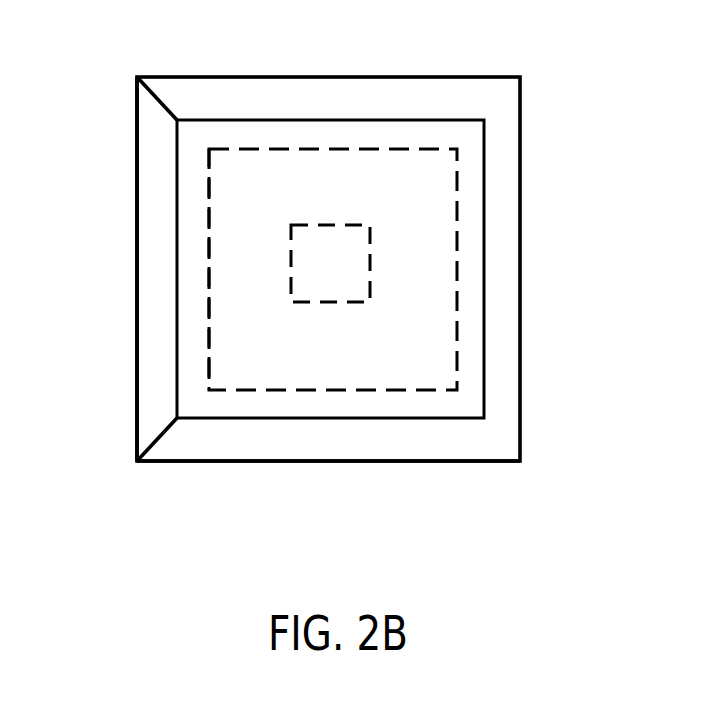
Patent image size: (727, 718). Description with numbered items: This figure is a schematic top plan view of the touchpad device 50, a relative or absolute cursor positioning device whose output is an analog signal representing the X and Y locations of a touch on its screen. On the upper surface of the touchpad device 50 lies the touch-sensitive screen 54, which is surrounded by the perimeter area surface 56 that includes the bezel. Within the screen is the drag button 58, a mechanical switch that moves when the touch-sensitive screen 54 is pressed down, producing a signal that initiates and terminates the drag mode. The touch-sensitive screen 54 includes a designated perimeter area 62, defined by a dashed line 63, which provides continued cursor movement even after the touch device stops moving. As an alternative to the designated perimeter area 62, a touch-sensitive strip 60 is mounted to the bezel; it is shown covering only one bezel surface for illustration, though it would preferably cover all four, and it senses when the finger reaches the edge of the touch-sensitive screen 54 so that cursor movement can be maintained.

The touchpad device 50 is at (488, 27).
The touch-sensitive screen 54 is at (383, 356).
The perimeter area surface 56 is at (363, 90).
The drag button 58 is at (324, 224).
The touch-sensitive strip 60 is at (157, 243).
The designated perimeter area 62 is at (238, 405).
The dashed line 63 is at (210, 340).